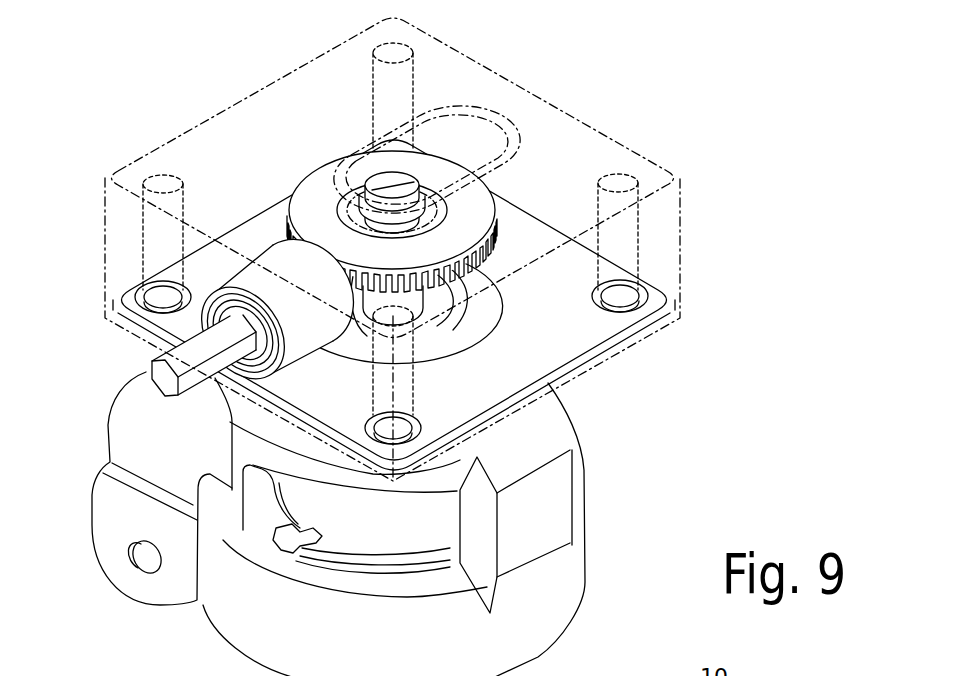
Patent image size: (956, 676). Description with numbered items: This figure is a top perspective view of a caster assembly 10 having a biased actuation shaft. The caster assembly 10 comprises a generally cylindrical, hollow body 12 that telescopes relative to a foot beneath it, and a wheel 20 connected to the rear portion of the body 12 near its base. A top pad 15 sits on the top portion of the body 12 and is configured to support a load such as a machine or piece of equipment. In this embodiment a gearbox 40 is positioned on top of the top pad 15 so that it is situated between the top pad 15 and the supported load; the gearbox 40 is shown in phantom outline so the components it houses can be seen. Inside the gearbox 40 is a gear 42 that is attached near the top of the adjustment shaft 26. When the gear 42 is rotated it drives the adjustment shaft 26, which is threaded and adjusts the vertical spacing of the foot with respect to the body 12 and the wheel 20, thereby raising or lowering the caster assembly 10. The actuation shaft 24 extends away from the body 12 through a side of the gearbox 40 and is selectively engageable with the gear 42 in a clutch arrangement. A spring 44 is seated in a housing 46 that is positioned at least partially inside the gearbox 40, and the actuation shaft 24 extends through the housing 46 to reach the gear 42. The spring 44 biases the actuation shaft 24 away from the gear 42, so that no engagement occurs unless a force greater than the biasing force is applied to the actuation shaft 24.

The caster assembly 10 is at (164, 50).
The body 12 is at (573, 572).
The top pad 15 is at (668, 304).
The wheel 20 is at (115, 417).
The actuation shaft 24 is at (177, 357).
The adjustment shaft 26 is at (392, 185).
The gearbox 40 is at (593, 146).
The gear 42 is at (497, 247).
The spring 44 is at (232, 312).
The housing 46 is at (280, 267).